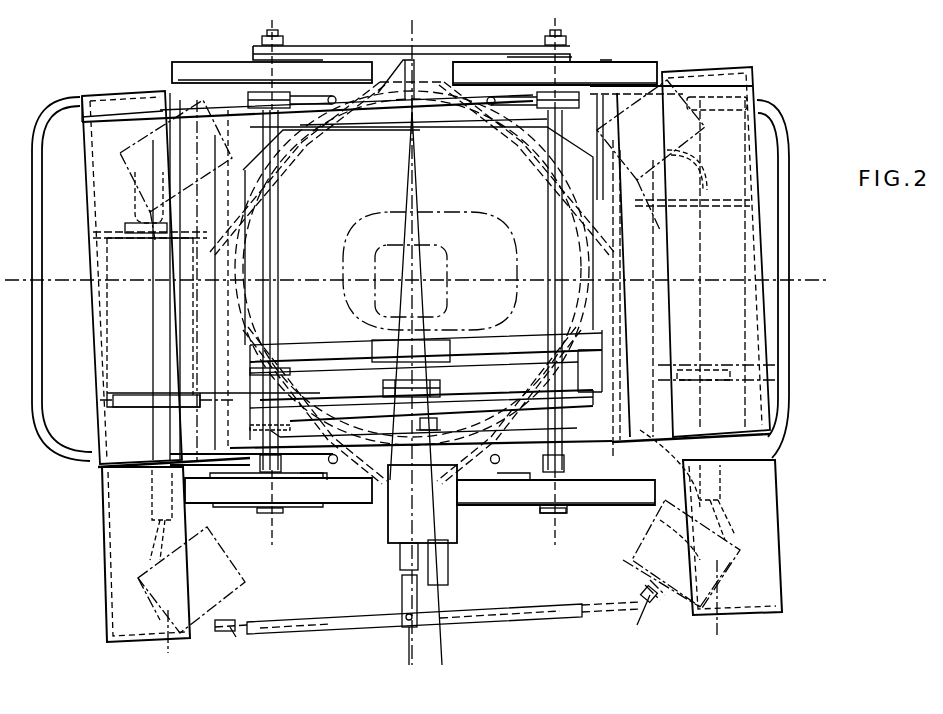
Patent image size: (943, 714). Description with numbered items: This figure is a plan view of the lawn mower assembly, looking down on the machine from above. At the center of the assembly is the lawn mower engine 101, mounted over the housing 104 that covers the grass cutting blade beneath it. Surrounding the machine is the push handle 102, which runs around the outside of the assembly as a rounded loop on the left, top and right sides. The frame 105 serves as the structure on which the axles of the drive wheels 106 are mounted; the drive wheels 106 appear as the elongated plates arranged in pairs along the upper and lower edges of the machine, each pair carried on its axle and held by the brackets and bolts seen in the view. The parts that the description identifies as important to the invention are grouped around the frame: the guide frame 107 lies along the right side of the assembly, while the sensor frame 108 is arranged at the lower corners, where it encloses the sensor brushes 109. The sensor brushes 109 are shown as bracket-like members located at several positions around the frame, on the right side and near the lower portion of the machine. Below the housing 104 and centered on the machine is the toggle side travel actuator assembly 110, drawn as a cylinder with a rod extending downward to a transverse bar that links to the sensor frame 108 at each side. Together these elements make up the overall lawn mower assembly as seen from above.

The lawn mower engine 101 is at (517, 245).
The push handle 102 is at (787, 263).
The housing 104 is at (360, 97).
The frame 105 is at (247, 107).
The drive wheels 106 is at (178, 62).
The guide frame 107 is at (595, 162).
The sensor frame 108 is at (108, 535).
The sensor brushes 109 is at (737, 300).
The toggle side travel actuator assembly 110 is at (447, 583).